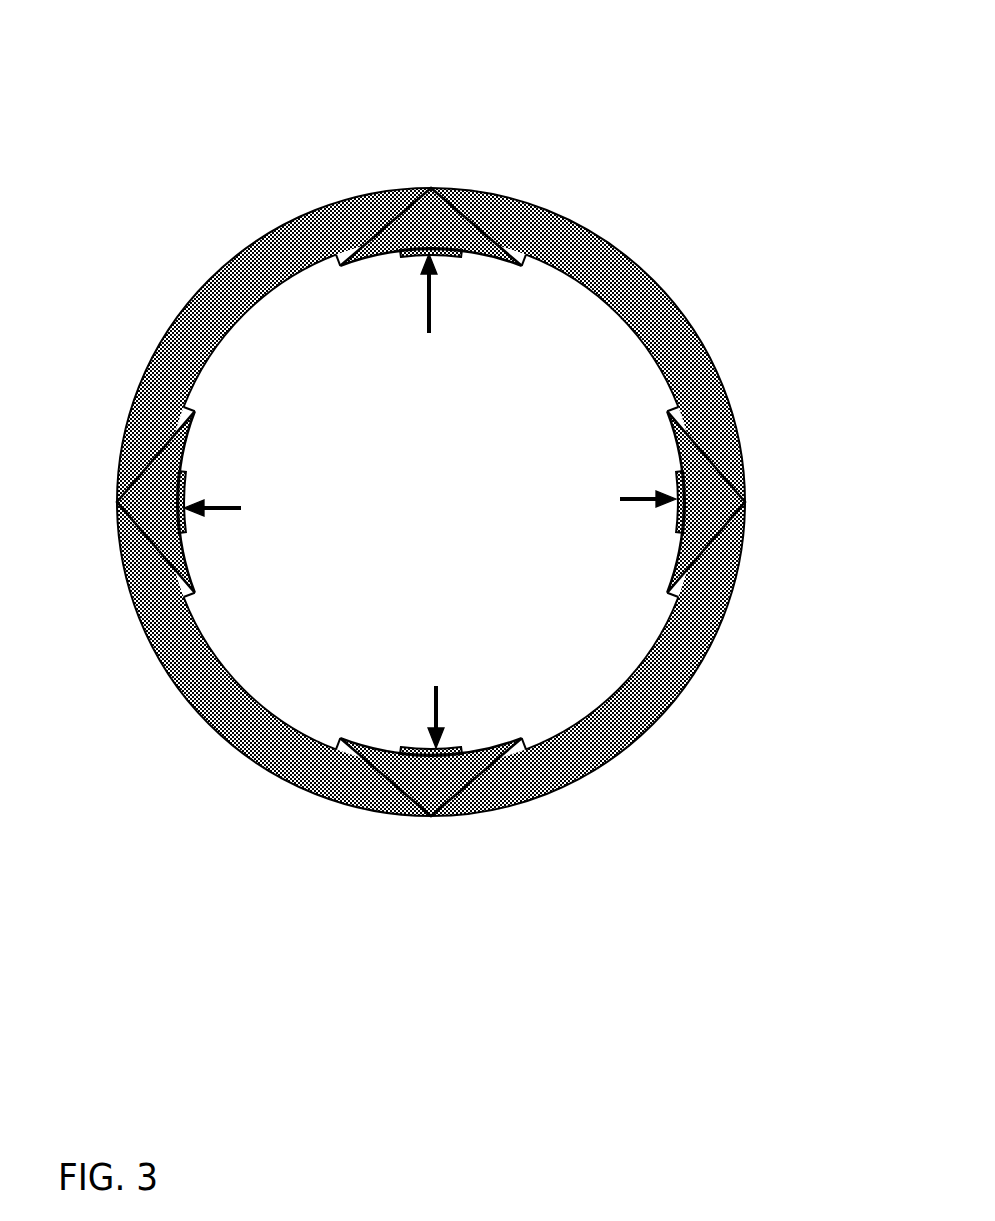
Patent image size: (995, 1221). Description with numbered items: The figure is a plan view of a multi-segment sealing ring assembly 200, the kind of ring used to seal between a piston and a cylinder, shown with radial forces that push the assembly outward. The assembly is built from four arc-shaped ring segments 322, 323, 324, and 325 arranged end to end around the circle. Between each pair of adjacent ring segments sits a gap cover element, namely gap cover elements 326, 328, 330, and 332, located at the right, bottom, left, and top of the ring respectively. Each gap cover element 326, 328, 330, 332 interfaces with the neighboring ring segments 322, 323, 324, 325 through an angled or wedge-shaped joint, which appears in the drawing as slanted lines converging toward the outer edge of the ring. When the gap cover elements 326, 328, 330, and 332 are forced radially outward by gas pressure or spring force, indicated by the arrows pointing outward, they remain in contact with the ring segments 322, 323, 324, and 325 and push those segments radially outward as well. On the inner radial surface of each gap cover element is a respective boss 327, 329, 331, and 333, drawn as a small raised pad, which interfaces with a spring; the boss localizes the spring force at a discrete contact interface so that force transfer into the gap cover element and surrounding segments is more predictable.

The multi-segment sealing ring assembly 200 is at (160, 42).
The ring segment 322 is at (560, 208).
The ring segment 323 is at (660, 700).
The ring segment 324 is at (225, 738).
The ring segment 325 is at (207, 268).
The gap cover element 326 is at (740, 486).
The boss 327 is at (668, 512).
The gap cover element 328 is at (455, 808).
The boss 329 is at (453, 740).
The gap cover element 330 is at (110, 465).
The boss 331 is at (176, 470).
The gap cover element 332 is at (427, 178).
The boss 333 is at (448, 252).